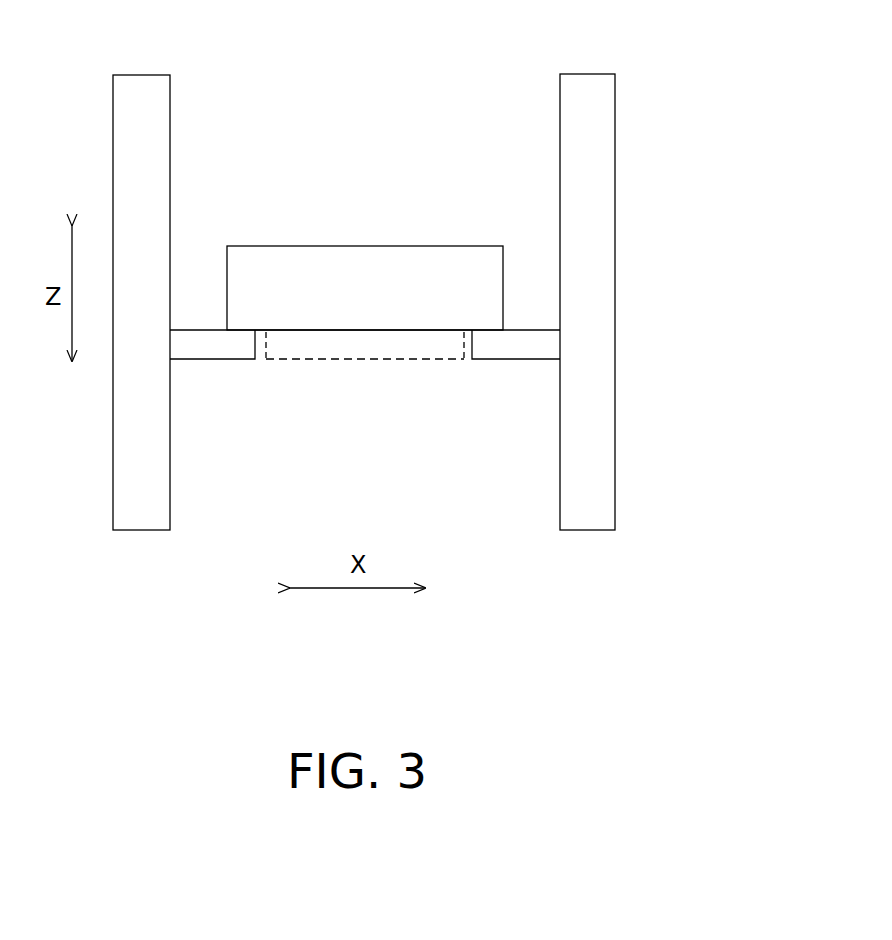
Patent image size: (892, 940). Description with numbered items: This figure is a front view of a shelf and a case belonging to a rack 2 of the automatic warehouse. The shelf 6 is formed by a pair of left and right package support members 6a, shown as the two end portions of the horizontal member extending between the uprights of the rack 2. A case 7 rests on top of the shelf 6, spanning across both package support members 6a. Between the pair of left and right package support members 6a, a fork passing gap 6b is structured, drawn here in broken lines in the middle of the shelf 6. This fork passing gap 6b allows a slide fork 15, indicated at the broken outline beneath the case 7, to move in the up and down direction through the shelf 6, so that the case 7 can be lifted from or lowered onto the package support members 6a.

The rack 2 is at (637, 88).
The shelf 6 is at (423, 363).
The package support member 6a is at (202, 348).
The fork passing gap 6b is at (365, 426).
The case 7 is at (322, 247).
The slide fork 15 is at (368, 360).